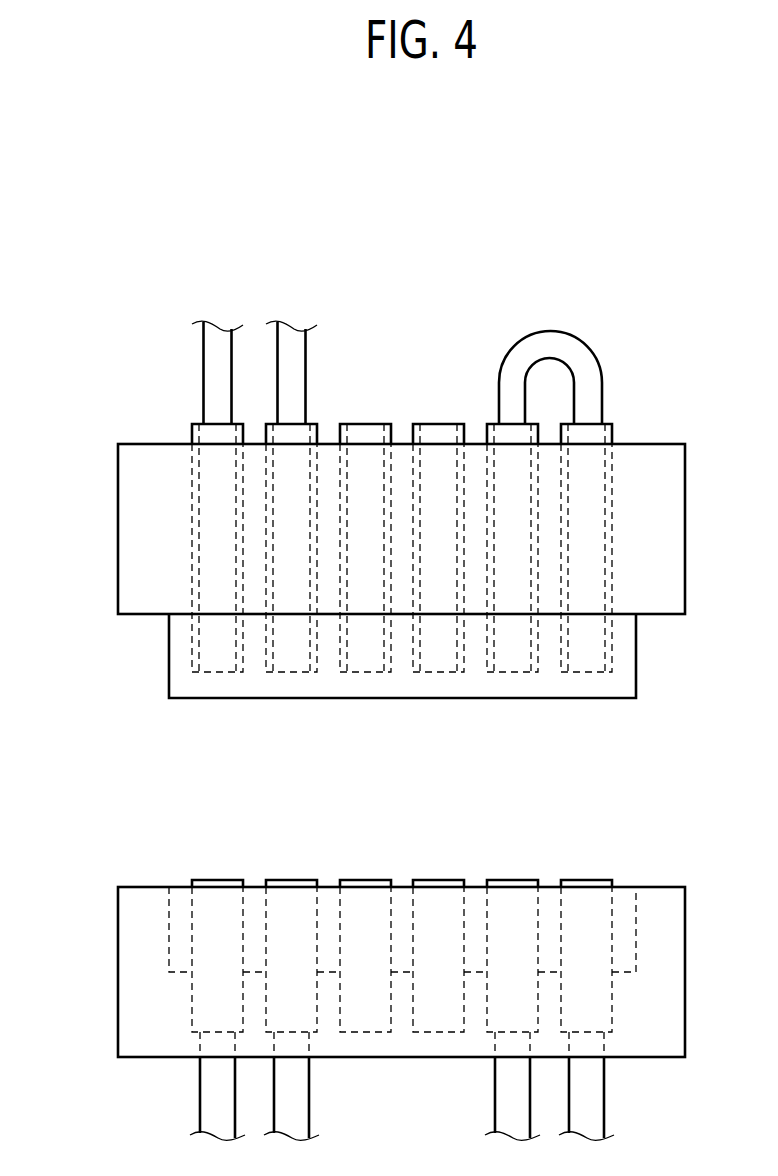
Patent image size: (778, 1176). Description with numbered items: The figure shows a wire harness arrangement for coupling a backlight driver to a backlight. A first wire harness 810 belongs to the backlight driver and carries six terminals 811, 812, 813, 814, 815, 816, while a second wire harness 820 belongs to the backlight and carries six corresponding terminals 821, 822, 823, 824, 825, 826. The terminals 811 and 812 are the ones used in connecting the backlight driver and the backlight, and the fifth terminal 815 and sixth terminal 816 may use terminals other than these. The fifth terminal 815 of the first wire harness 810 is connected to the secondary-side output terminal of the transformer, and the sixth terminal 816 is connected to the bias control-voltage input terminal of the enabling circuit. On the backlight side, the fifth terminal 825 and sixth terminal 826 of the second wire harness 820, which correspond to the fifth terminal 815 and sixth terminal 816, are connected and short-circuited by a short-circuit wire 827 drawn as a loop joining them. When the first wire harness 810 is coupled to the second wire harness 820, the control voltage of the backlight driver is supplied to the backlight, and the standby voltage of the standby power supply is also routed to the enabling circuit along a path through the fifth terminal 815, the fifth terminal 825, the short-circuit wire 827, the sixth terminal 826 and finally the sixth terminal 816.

The first wire harness 810 is at (118, 973).
The terminal 811 is at (216, 878).
The terminal 812 is at (290, 878).
The terminal 813 is at (364, 878).
The terminal 814 is at (437, 878).
The fifth terminal 815 is at (511, 878).
The sixth terminal 816 is at (585, 878).
The second wire harness 820 is at (118, 531).
The terminal 821 is at (218, 675).
The terminal 822 is at (292, 675).
The terminal 823 is at (366, 675).
The terminal 824 is at (438, 675).
The fifth terminal 825 is at (512, 675).
The sixth terminal 826 is at (586, 675).
The short-circuit wire 827 is at (549, 331).